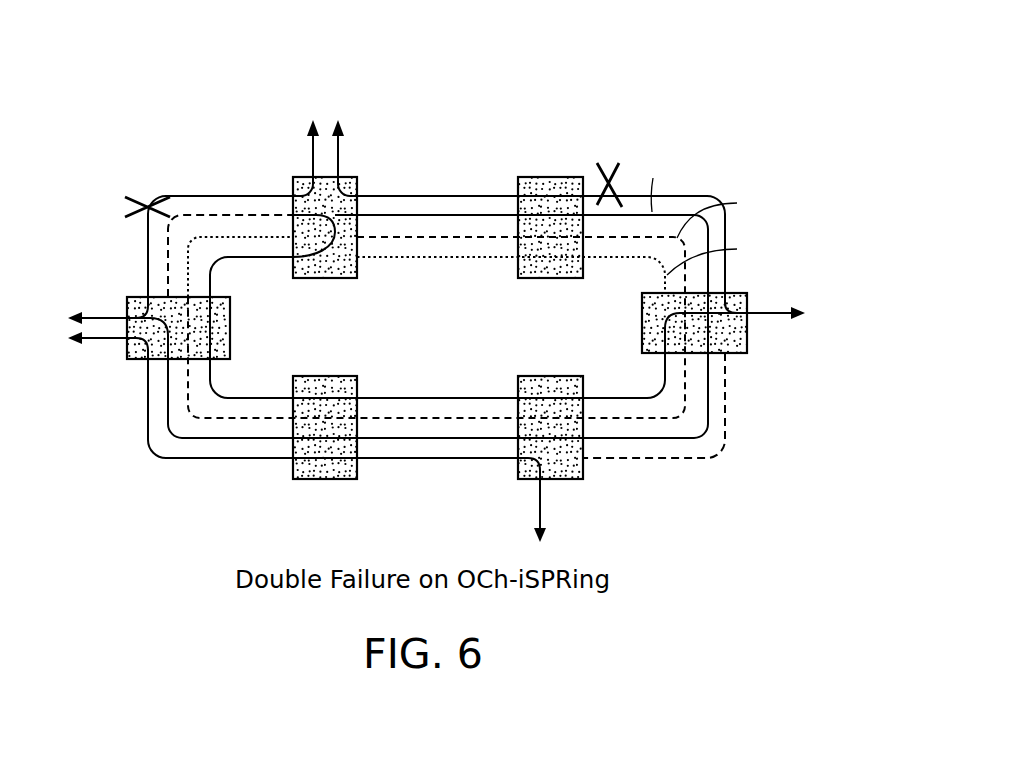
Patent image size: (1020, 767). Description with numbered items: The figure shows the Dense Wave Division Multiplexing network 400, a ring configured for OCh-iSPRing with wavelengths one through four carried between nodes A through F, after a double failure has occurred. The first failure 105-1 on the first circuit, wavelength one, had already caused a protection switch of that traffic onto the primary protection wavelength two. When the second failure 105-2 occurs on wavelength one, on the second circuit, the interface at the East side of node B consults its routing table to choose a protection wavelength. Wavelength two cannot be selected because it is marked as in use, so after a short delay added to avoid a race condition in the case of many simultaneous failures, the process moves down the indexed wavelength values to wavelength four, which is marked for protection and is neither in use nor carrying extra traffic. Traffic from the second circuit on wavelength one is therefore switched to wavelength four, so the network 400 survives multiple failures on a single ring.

The DWDM network 400 is at (675, 86).
The single failure 105-1 is at (131, 194).
The second failure 105-2 is at (619, 164).